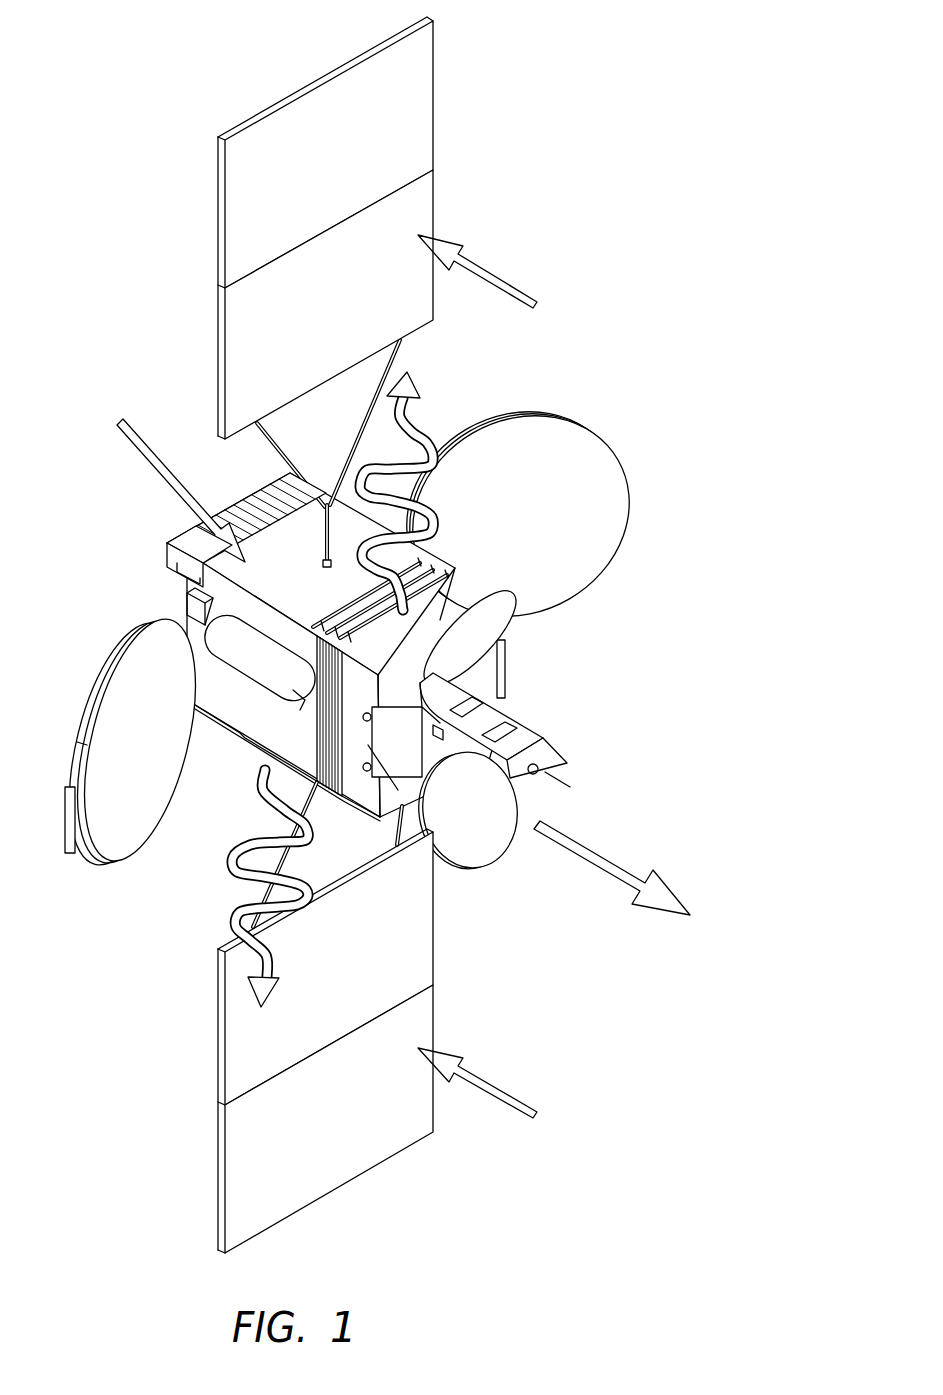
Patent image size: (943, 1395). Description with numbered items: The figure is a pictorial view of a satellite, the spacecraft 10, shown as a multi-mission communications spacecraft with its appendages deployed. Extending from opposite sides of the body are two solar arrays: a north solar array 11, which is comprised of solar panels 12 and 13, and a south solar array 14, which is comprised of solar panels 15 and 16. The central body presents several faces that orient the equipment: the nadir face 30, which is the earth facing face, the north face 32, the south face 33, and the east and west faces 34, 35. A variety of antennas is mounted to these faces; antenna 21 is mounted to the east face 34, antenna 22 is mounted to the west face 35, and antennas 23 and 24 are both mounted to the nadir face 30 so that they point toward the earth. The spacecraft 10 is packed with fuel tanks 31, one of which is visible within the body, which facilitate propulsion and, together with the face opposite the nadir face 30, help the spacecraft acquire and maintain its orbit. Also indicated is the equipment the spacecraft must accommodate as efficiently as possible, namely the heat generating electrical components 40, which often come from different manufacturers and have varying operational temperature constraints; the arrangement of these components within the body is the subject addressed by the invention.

The spacecraft 10 is at (591, 207).
The north solar array 11 is at (385, 222).
The solar panel 12 is at (413, 82).
The solar panel 13 is at (408, 220).
The south solar array 14 is at (380, 1041).
The solar panel 15 is at (422, 932).
The solar panel 16 is at (430, 1022).
The antenna 21 is at (117, 843).
The antenna 22 is at (565, 585).
The antenna 23 is at (492, 630).
The antenna 24 is at (483, 817).
The nadir face 30 is at (564, 738).
The fuel tanks 31 is at (220, 643).
The north face 32 is at (230, 577).
The south face 33 is at (227, 742).
The east face 34 is at (220, 672).
The west face 35 is at (448, 556).
The heat generating electrical components 40 is at (178, 538).